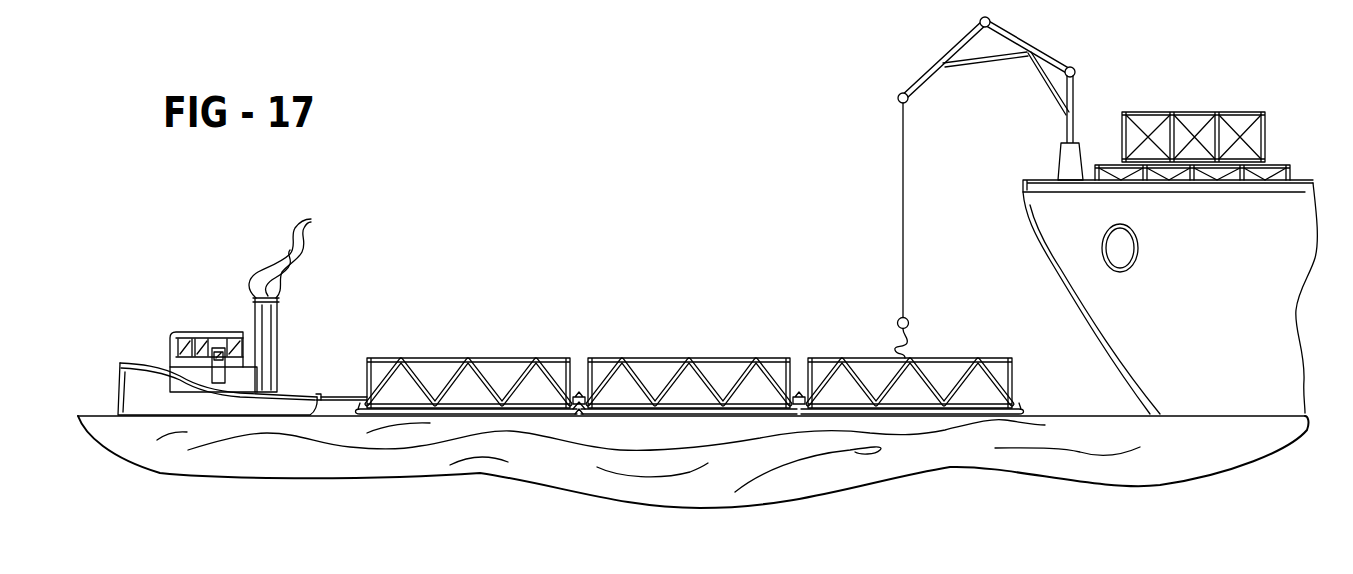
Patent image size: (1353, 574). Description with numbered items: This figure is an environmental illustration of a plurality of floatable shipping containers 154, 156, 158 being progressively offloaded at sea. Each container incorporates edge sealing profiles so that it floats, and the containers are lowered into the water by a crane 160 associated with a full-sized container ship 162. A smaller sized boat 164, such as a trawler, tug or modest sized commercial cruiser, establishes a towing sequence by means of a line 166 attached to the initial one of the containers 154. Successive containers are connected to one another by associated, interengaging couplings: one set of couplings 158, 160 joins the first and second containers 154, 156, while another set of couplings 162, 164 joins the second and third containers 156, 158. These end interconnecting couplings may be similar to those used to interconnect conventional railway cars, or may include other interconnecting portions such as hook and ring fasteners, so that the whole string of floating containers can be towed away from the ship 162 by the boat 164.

The floatable shipping container 154 is at (475, 357).
The floatable shipping container 156 is at (703, 357).
The floatable shipping container 158 is at (578, 398).
The crane 160 is at (1067, 128).
The container ship 162 is at (797, 398).
The boat 164 is at (290, 393).
The towing line 166 is at (336, 394).